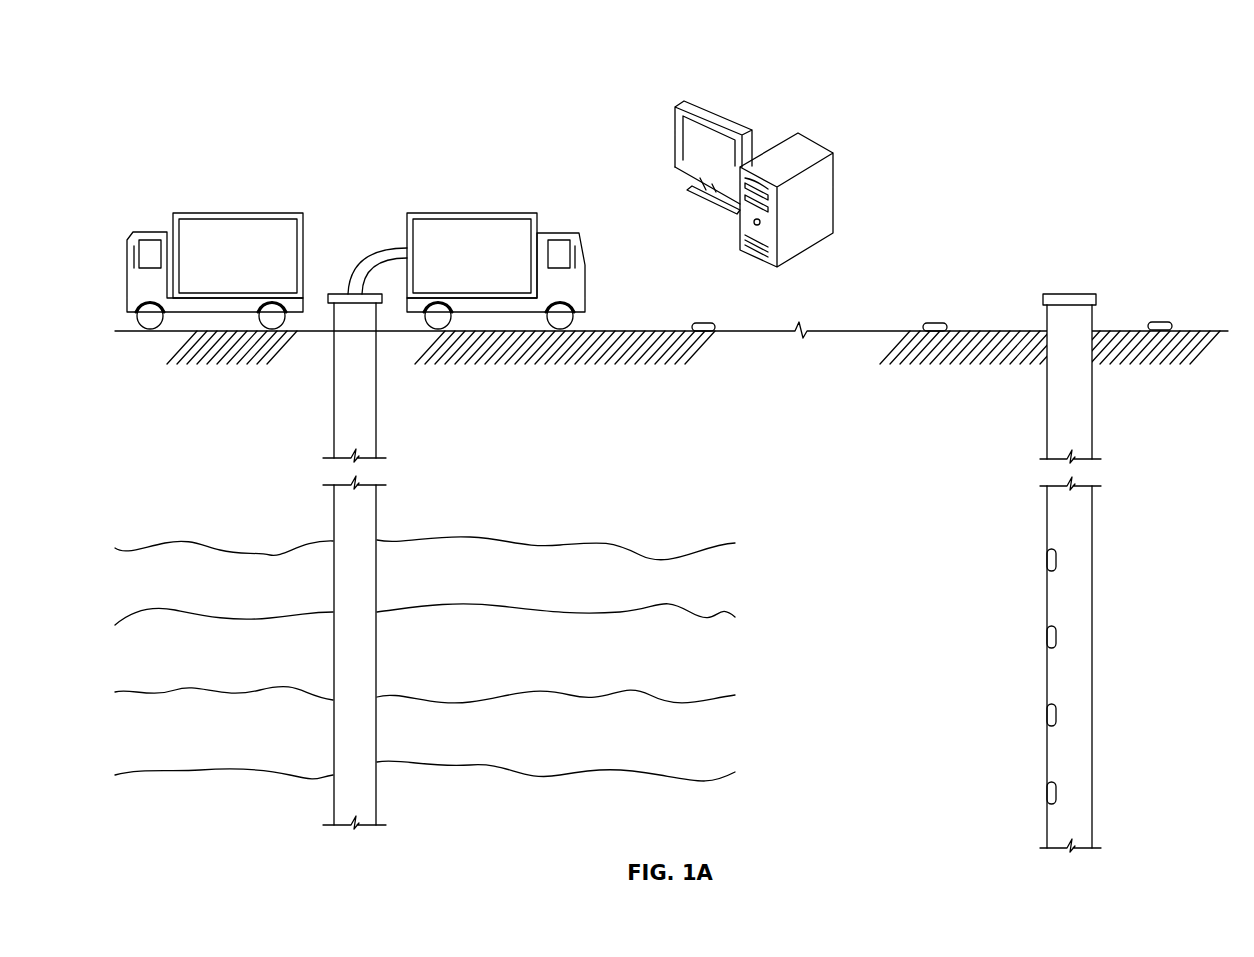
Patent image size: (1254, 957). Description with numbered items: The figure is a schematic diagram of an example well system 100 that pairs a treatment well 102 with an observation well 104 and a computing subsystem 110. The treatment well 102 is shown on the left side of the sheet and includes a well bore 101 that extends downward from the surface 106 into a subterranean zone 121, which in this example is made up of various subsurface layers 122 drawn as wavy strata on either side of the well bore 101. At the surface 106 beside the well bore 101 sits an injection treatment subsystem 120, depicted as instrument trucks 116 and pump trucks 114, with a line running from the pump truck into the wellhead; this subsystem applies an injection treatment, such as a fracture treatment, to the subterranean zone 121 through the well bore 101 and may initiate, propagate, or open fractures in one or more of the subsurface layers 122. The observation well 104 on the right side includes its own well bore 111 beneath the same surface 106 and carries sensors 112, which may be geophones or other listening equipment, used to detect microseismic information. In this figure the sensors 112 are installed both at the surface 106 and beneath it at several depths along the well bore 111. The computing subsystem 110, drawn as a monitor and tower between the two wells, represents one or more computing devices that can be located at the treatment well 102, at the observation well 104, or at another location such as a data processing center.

The well system 100 is at (195, 93).
The well bore 101 is at (348, 420).
The treatment well 102 is at (302, 145).
The observation well 104 is at (1073, 180).
The surface 106 is at (850, 330).
The computing subsystem 110 is at (815, 143).
The well bore 111 is at (1073, 425).
The sensors 112 is at (703, 322).
The pump trucks 114 is at (460, 269).
The instrument trucks 116 is at (216, 269).
The injection treatment subsystem 120 is at (372, 158).
The subterranean zone 121 is at (745, 492).
The subsurface layers 122 is at (523, 589).